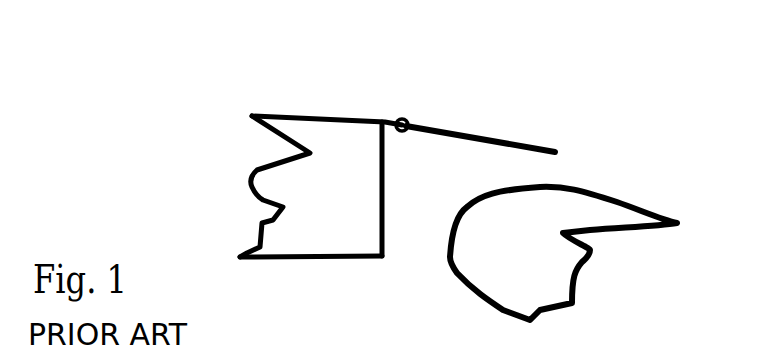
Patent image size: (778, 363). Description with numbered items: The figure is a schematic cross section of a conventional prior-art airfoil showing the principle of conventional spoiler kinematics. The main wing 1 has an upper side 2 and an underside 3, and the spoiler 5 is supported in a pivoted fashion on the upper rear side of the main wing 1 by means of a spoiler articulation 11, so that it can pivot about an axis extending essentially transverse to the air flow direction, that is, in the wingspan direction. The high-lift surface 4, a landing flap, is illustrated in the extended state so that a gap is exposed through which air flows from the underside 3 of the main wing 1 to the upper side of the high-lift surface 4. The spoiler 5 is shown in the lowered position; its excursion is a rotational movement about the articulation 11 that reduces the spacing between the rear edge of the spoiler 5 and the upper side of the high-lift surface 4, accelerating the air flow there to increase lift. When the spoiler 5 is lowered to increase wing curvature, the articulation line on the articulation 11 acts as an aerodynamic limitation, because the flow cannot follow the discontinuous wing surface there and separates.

The main wing 1 is at (315, 180).
The upper side 2 is at (302, 116).
The underside 3 is at (290, 262).
The high-lift surface 4 is at (557, 210).
The spoiler 5 is at (490, 128).
The first articulation of the spoiler 11 is at (408, 120).